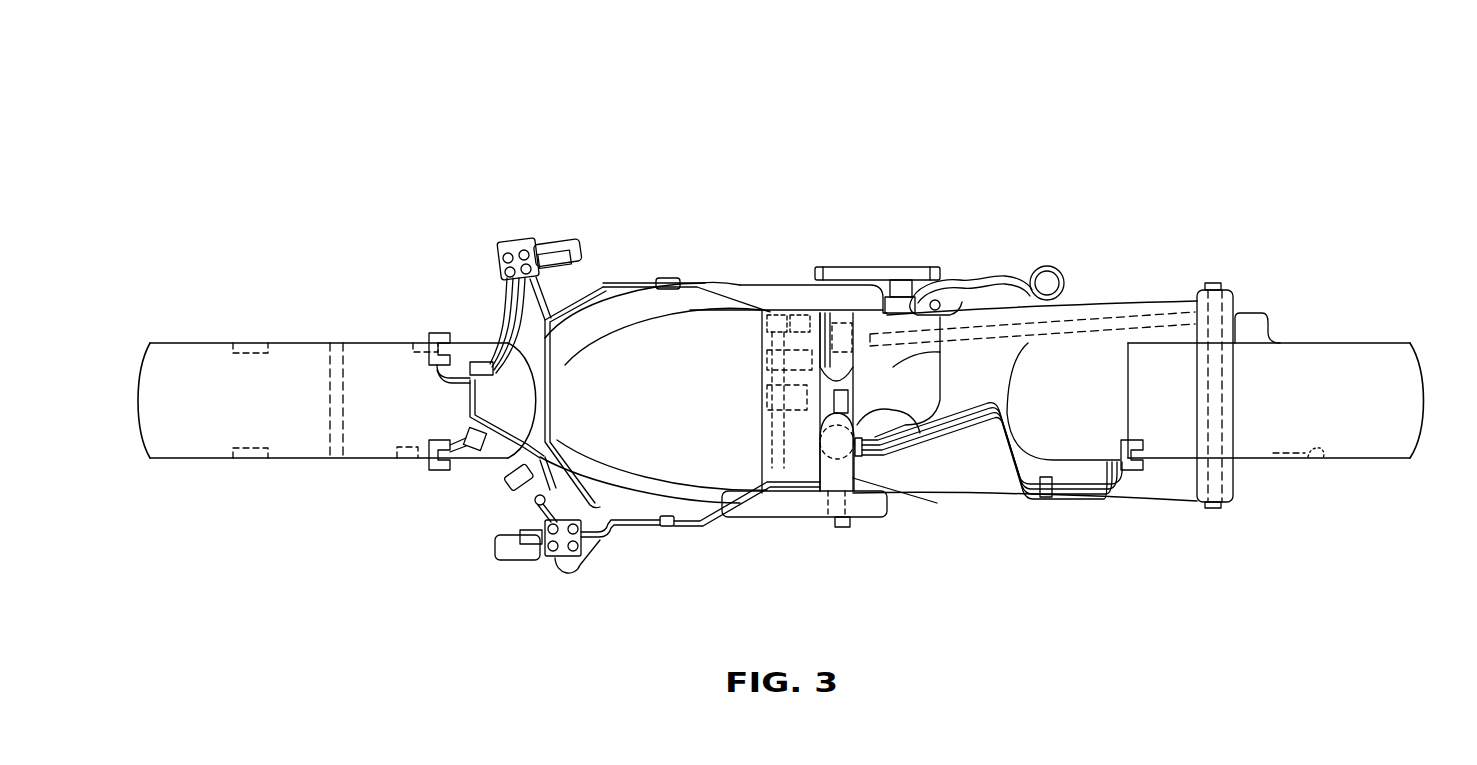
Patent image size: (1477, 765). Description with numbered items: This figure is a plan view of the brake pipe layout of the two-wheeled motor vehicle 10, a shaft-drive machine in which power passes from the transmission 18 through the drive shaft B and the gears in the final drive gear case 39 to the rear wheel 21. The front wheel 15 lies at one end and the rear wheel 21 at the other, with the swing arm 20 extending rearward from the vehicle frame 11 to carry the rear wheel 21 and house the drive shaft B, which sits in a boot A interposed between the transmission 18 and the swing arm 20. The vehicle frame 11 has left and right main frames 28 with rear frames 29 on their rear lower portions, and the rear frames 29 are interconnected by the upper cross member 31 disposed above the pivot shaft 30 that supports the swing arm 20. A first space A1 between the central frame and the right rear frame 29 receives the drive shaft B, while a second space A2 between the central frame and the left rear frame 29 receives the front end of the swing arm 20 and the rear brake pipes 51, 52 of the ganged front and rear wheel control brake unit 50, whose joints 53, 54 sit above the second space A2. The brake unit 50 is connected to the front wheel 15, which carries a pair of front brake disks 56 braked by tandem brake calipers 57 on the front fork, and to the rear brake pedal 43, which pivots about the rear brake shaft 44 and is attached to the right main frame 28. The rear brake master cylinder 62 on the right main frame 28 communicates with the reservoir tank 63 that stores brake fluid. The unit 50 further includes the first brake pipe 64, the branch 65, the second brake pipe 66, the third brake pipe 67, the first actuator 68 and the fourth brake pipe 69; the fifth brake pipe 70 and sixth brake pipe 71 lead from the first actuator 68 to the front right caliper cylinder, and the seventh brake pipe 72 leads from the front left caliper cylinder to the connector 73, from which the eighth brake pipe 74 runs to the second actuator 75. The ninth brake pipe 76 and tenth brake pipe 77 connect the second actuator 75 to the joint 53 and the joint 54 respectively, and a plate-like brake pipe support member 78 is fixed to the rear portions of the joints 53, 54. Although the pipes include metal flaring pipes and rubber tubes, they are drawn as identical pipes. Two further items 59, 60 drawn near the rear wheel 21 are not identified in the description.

The two-wheeled motor vehicle 10 is at (977, 115).
The vehicle frame 11 is at (587, 446).
The front wheel 15 is at (140, 440).
The transmission 18 is at (790, 335).
The swing arm 20 is at (973, 500).
The rear wheel 21 is at (1413, 452).
The main frames 28 is at (631, 483).
The rear frames 29 is at (790, 284).
The pivot shaft 30 is at (843, 531).
The upper cross member 31 is at (766, 384).
The final drive gear case 39 is at (1230, 302).
The rear brake pedal 43 is at (880, 267).
The rear brake shaft 44 is at (915, 283).
The ganged front and rear wheel control brake unit 50 is at (622, 250).
The rear brake pipe 51 is at (985, 402).
The rear brake pipe 52 is at (975, 430).
The joint 53 is at (850, 427).
The joint 54 is at (845, 490).
The front brake disks 56 is at (398, 462).
The tandem brake calipers 57 is at (442, 440).
The hole 59 is at (1313, 455).
The clip 60 is at (1125, 440).
The rear brake master cylinder 62 is at (983, 280).
The reservoir tank 63 is at (1045, 266).
The first brake pipe 64 is at (742, 286).
The branch 65 is at (670, 278).
The second brake pipe 66 is at (556, 404).
The third brake pipe 67 is at (560, 315).
The first actuator 68 is at (516, 238).
The fourth brake pipe 69 is at (510, 368).
The fifth brake pipe 70 is at (508, 300).
The sixth brake pipe 71 is at (505, 340).
The seventh brake pipe 72 is at (505, 454).
The connector 73 is at (517, 502).
The eighth brake pipe 74 is at (540, 520).
The second actuator 75 is at (547, 562).
The ninth brake pipe 76 is at (752, 487).
The tenth brake pipe 77 is at (744, 518).
The brake pipe support member 78 is at (900, 427).
The boot A is at (838, 322).
The first space A1 is at (920, 378).
The second space A2 is at (880, 463).
The drive shaft B is at (904, 330).